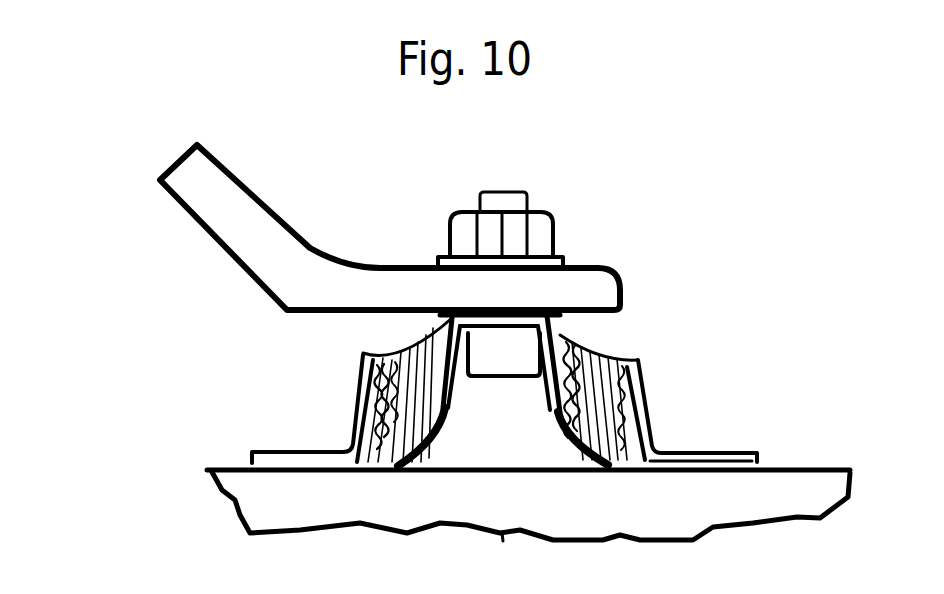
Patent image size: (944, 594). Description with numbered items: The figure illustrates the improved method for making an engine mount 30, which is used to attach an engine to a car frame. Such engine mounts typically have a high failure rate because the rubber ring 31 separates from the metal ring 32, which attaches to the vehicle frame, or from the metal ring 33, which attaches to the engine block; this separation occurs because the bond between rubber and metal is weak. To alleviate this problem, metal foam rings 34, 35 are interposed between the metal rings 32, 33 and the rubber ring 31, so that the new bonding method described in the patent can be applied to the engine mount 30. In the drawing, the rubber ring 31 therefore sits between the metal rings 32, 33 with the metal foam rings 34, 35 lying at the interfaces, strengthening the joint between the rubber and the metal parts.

The engine mount 30 is at (185, 250).
The rubber ring 31 is at (573, 440).
The metal ring 32 is at (681, 467).
The metal ring 33 is at (573, 333).
The metal foam ring 34 is at (640, 457).
The metal foam ring 35 is at (607, 357).